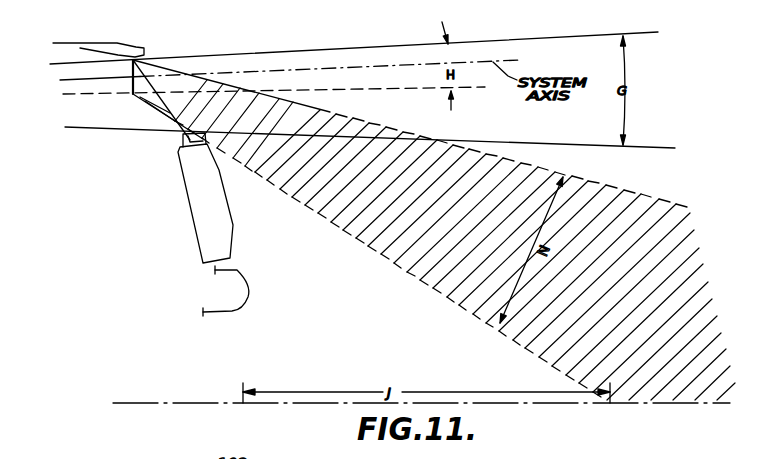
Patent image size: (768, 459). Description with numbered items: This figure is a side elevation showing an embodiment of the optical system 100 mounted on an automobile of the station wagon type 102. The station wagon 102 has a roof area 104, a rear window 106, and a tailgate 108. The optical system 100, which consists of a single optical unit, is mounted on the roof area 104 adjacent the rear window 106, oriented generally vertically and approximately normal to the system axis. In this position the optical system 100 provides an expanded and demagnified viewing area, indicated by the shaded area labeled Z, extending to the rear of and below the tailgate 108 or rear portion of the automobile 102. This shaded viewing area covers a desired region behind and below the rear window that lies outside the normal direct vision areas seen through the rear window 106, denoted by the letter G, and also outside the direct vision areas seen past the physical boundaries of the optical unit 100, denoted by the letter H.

The optical system 100 is at (130, 98).
The station wagon-type automobile 102 is at (192, 45).
The roof area 104 is at (114, 42).
The rear window 106 is at (178, 108).
The tailgate 108 is at (235, 238).